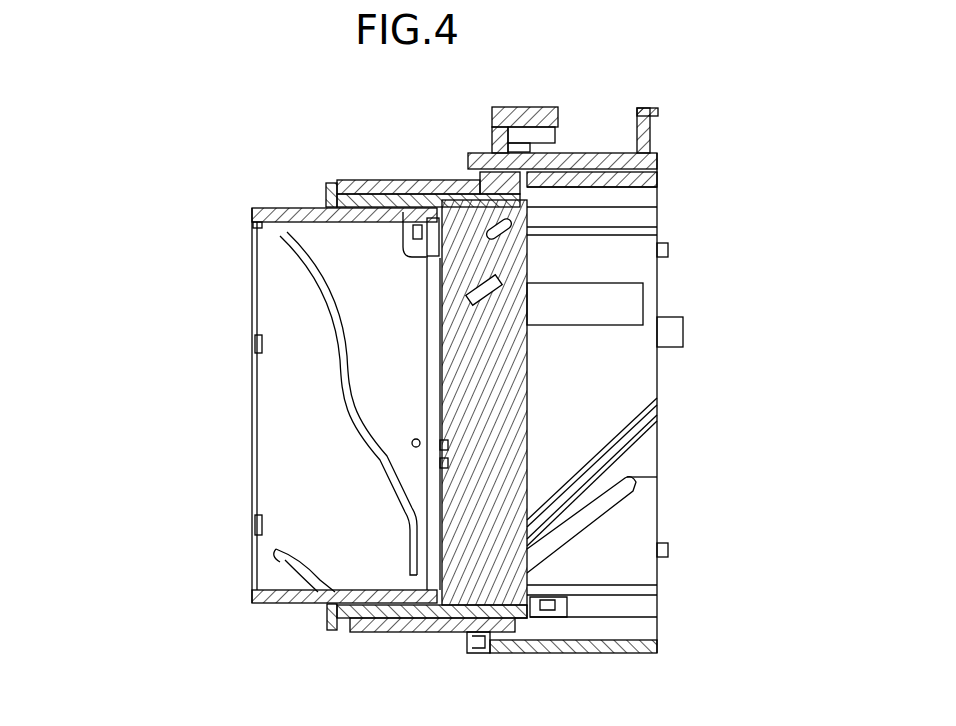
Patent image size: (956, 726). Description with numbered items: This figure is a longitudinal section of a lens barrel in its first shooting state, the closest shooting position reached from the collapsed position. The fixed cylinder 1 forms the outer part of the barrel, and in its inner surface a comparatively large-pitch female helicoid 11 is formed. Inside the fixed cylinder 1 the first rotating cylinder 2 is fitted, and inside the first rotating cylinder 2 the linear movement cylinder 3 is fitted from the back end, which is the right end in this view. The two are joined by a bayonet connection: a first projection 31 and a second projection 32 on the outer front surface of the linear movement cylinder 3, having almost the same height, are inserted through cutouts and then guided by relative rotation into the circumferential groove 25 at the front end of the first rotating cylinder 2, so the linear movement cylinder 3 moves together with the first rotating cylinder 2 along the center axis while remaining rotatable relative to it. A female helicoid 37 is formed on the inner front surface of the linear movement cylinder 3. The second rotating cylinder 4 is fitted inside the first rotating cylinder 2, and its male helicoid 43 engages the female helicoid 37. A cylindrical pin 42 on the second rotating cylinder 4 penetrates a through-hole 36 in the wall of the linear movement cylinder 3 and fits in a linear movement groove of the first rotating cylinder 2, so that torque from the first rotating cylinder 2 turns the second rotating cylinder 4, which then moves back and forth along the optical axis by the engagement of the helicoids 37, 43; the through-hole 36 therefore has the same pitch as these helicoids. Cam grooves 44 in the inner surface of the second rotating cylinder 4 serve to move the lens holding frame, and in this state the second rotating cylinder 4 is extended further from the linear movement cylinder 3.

The fixed cylinder 1 is at (585, 258).
The first rotating cylinder 2 is at (427, 182).
The linear movement cylinder 3 is at (484, 185).
The second rotating cylinder 4 is at (293, 435).
The female helicoid 11 is at (597, 492).
The groove 25 is at (350, 187).
The first projection 31 is at (325, 218).
The second projection 32 is at (328, 628).
The through-hole 36 is at (475, 290).
The female helicoid 37 is at (458, 222).
The pin 42 is at (412, 447).
The male helicoid 43 is at (405, 225).
The cam groove 44 is at (340, 395).